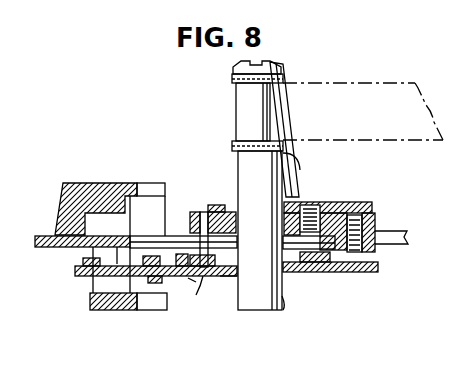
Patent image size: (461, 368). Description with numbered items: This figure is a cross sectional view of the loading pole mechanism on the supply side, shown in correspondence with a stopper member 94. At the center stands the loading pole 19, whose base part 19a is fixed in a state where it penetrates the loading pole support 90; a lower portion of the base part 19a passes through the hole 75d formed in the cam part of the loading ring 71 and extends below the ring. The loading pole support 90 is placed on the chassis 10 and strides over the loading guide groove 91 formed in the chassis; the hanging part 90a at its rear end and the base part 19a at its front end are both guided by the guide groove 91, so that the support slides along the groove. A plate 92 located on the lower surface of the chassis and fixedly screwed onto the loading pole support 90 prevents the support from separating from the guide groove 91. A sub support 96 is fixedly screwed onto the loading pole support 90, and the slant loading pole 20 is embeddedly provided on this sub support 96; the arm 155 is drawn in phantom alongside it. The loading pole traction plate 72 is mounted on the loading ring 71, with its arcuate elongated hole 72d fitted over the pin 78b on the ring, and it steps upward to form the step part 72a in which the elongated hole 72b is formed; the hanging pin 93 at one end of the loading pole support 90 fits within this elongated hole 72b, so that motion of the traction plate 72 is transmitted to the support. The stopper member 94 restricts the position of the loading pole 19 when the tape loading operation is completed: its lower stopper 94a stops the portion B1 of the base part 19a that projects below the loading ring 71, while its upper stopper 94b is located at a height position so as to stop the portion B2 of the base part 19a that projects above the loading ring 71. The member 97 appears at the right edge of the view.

The housing 10 is at (454, 208).
The loading pole 19 is at (236, 104).
The base part 19a is at (285, 299).
The slant loading pole 20 is at (289, 115).
The loading ring 71 is at (46, 236).
The loading pole traction plate 72 is at (76, 267).
The step part 72a is at (217, 277).
The elongated hole 72b is at (218, 280).
The arcuate elongated hole 72d is at (123, 249).
The hole 75d is at (192, 280).
The pin 78b is at (167, 249).
The loading pole support 90 is at (330, 203).
The hanging part 90a is at (374, 225).
The loading guide groove 91 is at (389, 241).
The plate 92 is at (316, 264).
The hanging pin 93 is at (189, 231).
The stopper member 94 is at (86, 182).
The lower stopper 94a is at (144, 306).
The upper stopper 94b is at (146, 182).
The sub support 96 is at (352, 203).
The member 97 is at (454, 258).
The arm 155 is at (341, 81).
The portion of the base part projecting below the loading ring B1 is at (233, 300).
The portion of the base part projecting above the loading ring B2 is at (233, 190).